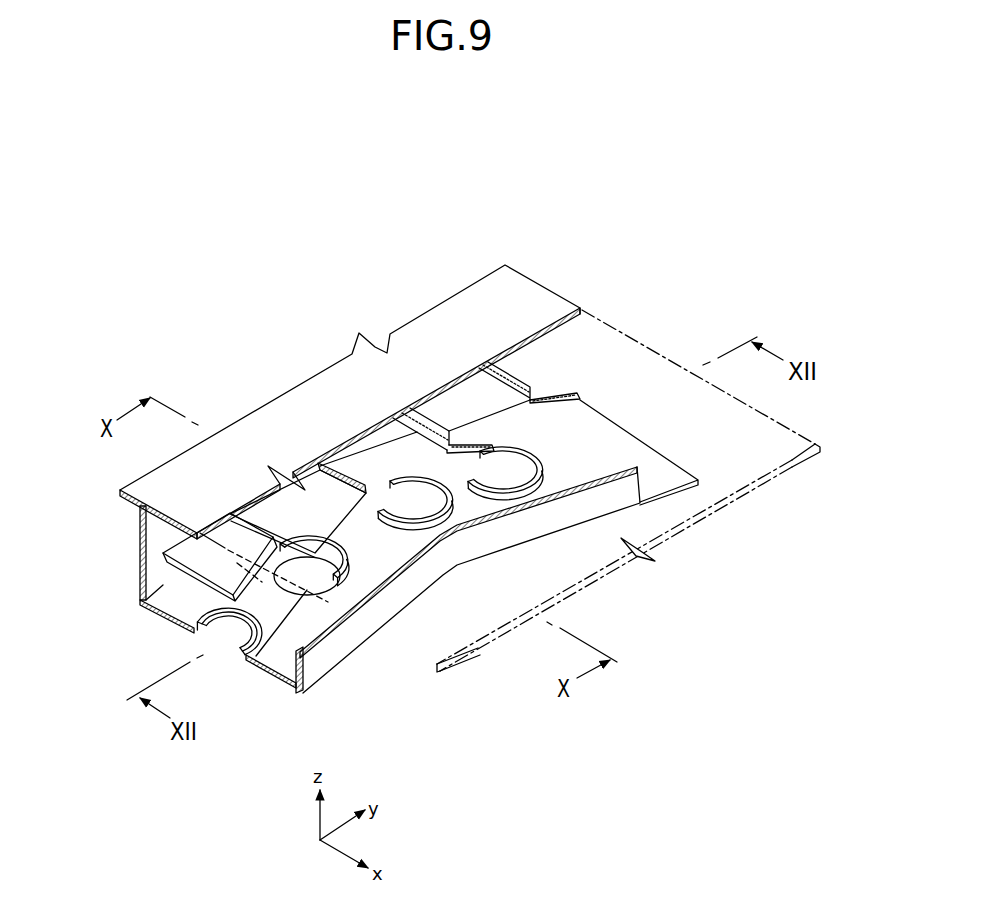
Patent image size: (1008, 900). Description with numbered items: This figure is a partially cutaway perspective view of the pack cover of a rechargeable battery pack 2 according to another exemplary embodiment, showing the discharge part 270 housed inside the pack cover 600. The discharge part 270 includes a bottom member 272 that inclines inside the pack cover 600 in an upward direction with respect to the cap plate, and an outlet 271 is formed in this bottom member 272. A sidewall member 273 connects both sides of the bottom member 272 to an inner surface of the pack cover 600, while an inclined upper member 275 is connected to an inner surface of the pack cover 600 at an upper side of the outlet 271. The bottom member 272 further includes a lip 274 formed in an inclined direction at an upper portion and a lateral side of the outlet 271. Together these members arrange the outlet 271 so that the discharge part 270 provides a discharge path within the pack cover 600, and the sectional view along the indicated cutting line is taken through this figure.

The rechargeable battery pack 2 is at (399, 241).
The pack cover 600 is at (333, 356).
The discharge part 270 is at (132, 602).
The outlet 271 is at (227, 690).
The bottom member 272 is at (310, 618).
The sidewall member 273 is at (140, 530).
The lip 274 is at (348, 560).
The inclined upper member 275 is at (183, 557).